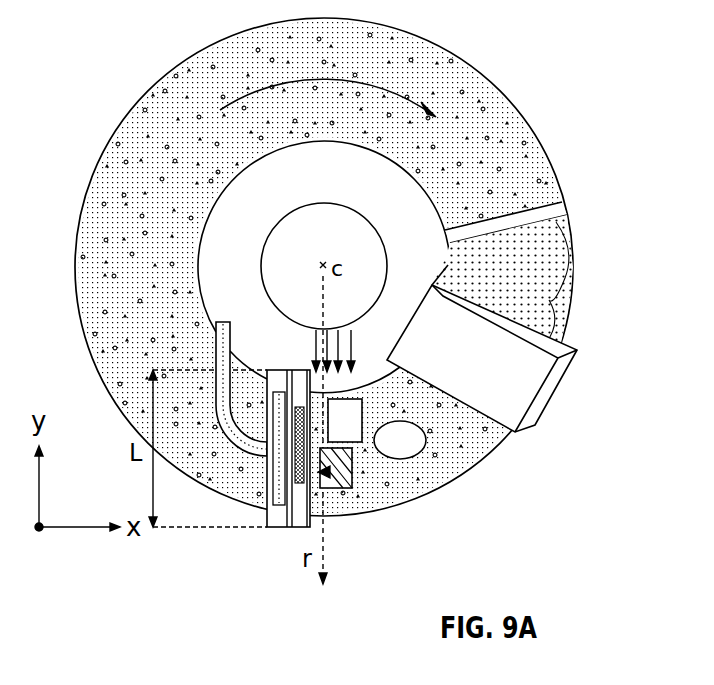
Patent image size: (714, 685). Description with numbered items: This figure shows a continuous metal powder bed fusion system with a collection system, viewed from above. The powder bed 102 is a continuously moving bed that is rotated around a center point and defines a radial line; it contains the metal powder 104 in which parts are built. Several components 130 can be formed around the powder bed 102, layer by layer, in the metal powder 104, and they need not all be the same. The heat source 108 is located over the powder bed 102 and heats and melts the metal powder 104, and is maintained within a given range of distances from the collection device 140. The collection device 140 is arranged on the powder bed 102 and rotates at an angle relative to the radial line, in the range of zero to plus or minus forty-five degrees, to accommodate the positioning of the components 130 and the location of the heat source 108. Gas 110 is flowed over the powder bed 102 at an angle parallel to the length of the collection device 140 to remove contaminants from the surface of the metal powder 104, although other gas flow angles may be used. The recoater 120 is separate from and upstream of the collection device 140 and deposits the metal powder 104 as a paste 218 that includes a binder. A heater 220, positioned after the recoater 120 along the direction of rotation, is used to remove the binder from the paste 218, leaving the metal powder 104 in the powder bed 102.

The powder bed 102 is at (525, 120).
The metal powder 104 is at (533, 168).
The recoater 120 is at (566, 214).
The paste 218 is at (541, 268).
The heater 220 is at (552, 401).
The gas 110 is at (315, 347).
The components 130 is at (410, 446).
The heat source 108 is at (325, 475).
The collection device 140 is at (276, 528).